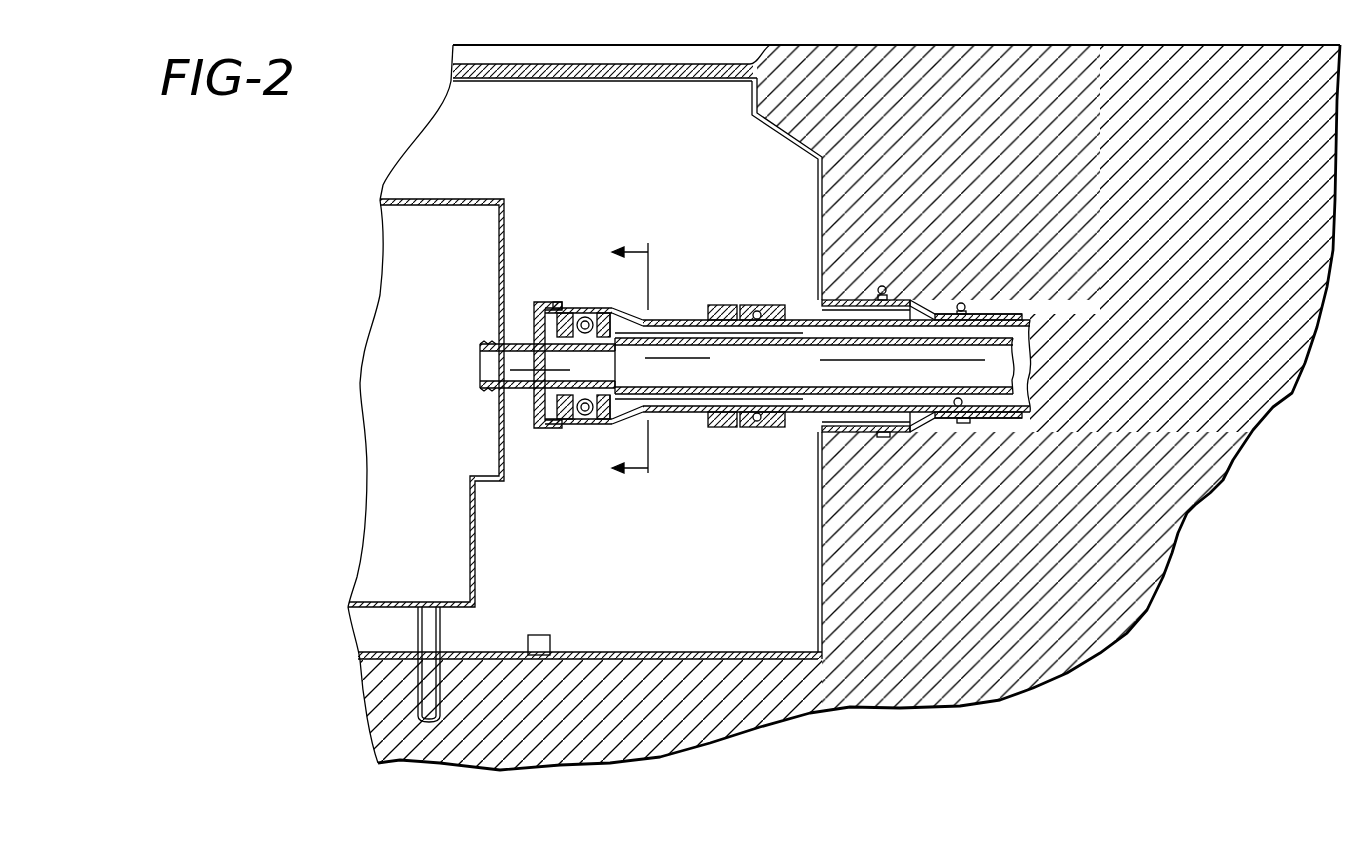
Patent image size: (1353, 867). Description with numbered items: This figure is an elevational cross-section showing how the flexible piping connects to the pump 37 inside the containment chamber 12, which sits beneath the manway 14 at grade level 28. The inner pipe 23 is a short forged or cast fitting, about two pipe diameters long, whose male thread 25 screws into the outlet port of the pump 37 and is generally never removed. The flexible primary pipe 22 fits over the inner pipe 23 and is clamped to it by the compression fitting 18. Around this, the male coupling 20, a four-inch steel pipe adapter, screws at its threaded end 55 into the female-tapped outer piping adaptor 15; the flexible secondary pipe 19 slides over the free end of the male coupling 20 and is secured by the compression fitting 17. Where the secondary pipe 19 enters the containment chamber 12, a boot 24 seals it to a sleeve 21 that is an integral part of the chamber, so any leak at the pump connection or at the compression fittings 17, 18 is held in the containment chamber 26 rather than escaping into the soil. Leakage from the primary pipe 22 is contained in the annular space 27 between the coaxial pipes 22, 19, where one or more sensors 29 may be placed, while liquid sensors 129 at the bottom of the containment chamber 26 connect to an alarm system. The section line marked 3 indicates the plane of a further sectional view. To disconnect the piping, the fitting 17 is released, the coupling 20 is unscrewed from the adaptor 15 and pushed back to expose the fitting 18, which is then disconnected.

The manway 14 is at (705, 48).
The grade level 28 is at (1010, 45).
The containment chamber 12 is at (843, 152).
The pump 37 is at (430, 196).
The threaded end 55 is at (558, 302).
The outer piping adaptor 15 is at (545, 298).
The compression fitting 18 is at (588, 310).
The section line 3 is at (641, 363).
The male coupling 20 is at (687, 320).
The compression fitting 17 is at (765, 304).
The primary pipe 22 is at (703, 347).
The inner pipe 23 is at (503, 350).
The male thread 25 is at (487, 390).
The sleeve 21 is at (858, 300).
The boot 24 is at (922, 300).
The secondary pipe 19 is at (1012, 320).
The annular space 27 is at (1035, 405).
The sensors 29 is at (957, 398).
The containment chamber 26 is at (790, 622).
The liquid sensors 129 is at (538, 658).